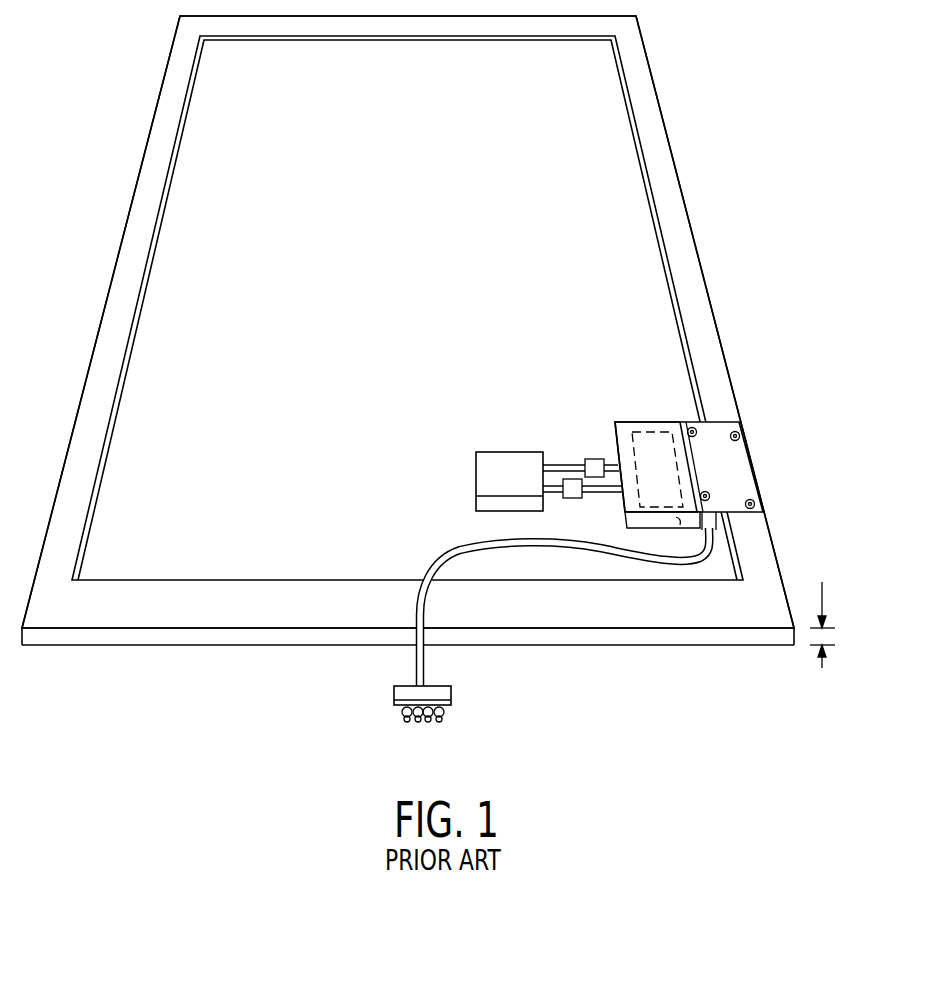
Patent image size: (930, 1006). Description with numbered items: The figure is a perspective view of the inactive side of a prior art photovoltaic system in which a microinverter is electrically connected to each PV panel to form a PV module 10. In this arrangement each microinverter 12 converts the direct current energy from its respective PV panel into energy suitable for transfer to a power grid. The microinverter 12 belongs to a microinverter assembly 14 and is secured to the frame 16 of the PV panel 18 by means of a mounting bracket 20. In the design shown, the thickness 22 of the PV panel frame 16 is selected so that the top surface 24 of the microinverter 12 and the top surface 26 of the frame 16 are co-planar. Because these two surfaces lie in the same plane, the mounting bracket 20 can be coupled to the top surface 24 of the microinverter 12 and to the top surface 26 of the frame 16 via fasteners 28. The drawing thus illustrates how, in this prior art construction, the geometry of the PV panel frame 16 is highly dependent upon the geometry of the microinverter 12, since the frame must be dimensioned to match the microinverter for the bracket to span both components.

The PV module 10 is at (113, 100).
The microinverter 12 is at (630, 415).
The microinverter assembly 14 is at (655, 520).
The frame 16 is at (776, 556).
The PV panel 18 is at (585, 237).
The mounting bracket 20 is at (723, 463).
The thickness 22 is at (822, 668).
The top surface 24 is at (652, 428).
The top surface 26 is at (698, 330).
The fasteners 28 is at (696, 429).